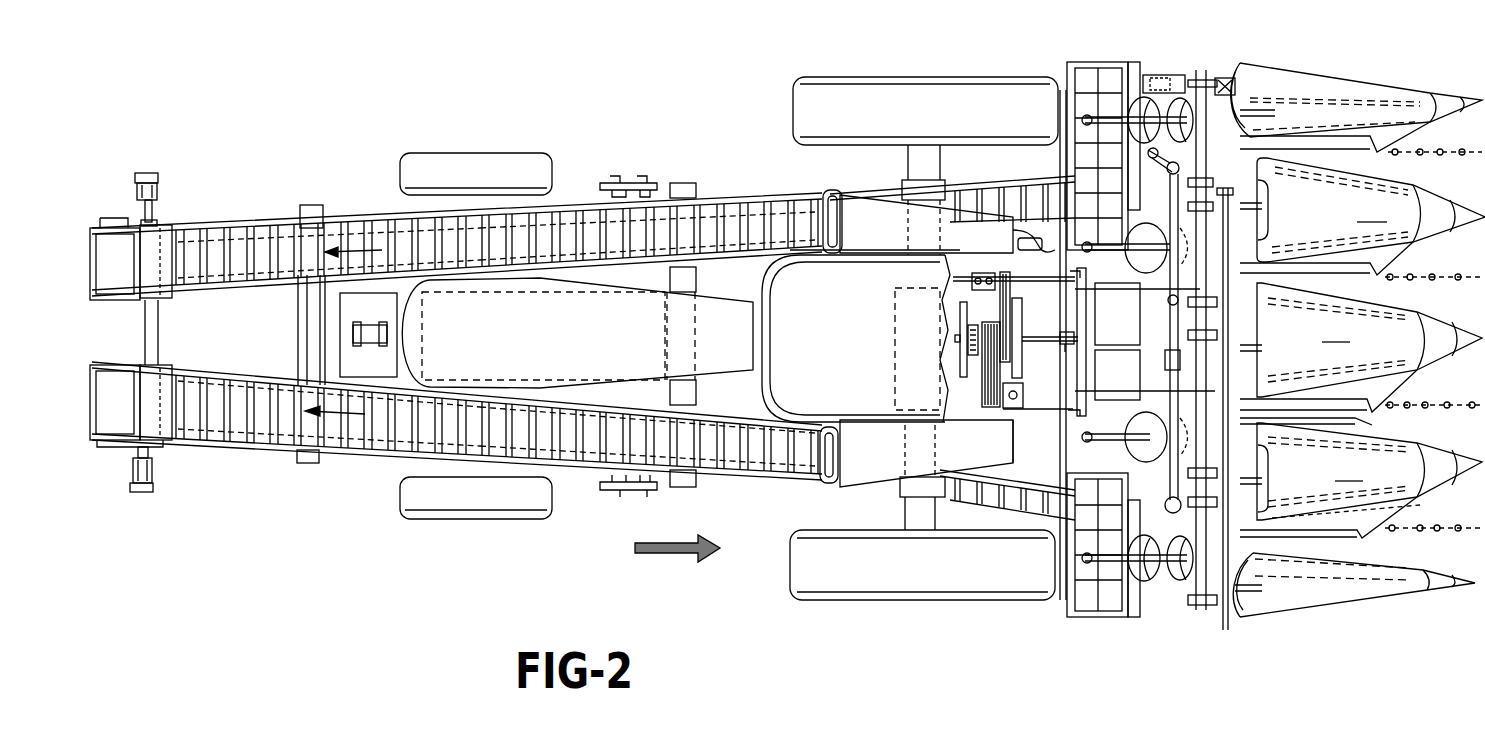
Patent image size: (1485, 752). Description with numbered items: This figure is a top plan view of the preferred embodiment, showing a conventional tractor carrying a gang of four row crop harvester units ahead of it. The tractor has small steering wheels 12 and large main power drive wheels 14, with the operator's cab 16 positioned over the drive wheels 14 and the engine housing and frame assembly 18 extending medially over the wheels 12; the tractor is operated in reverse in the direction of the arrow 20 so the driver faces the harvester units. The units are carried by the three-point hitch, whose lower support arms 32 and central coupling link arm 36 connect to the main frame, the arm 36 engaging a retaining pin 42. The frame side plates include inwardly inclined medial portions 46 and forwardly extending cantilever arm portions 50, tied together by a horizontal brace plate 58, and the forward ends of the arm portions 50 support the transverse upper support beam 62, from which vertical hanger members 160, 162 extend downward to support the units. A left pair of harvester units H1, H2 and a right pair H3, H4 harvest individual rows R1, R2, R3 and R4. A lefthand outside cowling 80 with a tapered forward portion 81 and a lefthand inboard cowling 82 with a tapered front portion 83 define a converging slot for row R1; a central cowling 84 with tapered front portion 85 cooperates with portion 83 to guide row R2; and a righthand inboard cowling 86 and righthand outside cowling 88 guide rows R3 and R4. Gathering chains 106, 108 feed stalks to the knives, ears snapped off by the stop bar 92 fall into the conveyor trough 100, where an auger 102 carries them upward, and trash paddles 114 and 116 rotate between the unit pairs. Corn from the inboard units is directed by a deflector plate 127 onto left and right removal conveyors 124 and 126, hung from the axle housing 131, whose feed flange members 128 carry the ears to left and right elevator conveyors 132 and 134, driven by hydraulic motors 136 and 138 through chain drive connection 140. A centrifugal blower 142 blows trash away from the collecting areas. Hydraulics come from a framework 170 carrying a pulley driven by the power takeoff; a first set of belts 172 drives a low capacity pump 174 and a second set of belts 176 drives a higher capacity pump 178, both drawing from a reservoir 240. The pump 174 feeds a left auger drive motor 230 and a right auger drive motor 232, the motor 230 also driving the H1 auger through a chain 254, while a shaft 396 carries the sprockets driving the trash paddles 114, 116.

The steering wheels 12 is at (455, 160).
The main power drive wheels 14 is at (852, 82).
The operator's cab 16 is at (861, 336).
The engine housing and frame assembly 18 is at (577, 333).
The arrow 20 is at (680, 558).
The lower support arms 32 is at (1050, 280).
The coupling link arm 36 is at (1058, 344).
The retaining pin 42 is at (1038, 376).
The inwardly inclined medial portions 46 is at (1075, 280).
The cantilever arm portions 50 is at (1092, 332).
The horizontal brace plate 58 is at (1078, 310).
The upper support beam 62 is at (1205, 72).
The lefthand outside cowling 80 is at (1375, 90).
The tapered forward portion 81 is at (1462, 98).
The lefthand inboard cowling 82 is at (1371, 210).
The tapered front portion 83 is at (1447, 212).
The central cowling 84 is at (1369, 340).
The tapered front portion 85 is at (1470, 335).
The righthand inboard cowling 86 is at (1369, 471).
The righthand outside cowling 88 is at (1330, 600).
The snap or stop bar 92 is at (1320, 150).
The conveyor trough 100 is at (1118, 78).
The auger 102 is at (1258, 124).
The gathering chain 106 is at (1300, 578).
The gathering chain 108 is at (1300, 503).
The trash eliminator paddle 114 is at (1267, 204).
The right trash removal paddle 116 is at (1255, 476).
The left removal conveyor 124 is at (1005, 186).
The right removal conveyor 126 is at (978, 490).
The left deflector plate 127 is at (1022, 248).
The feed flange members 128 is at (770, 185).
The axle housing 131 is at (905, 188).
The left elevator conveyor 132 is at (272, 220).
The right elevator conveyor 134 is at (245, 453).
The hydraulic motor 136 is at (152, 185).
The hydraulic motor 138 is at (152, 472).
The chain drive connection 140 is at (642, 490).
The centrifugal blower 142 is at (1100, 337).
The vertical hanger member 160 is at (1178, 76).
The vertical hanger member 162 is at (1148, 176).
The framework 170 is at (950, 322).
The first set of belts 172 is at (948, 301).
The low capacity pump 174 is at (945, 283).
The second set of belts 176 is at (948, 352).
The higher capacity pump 178 is at (950, 372).
The left auger drive motor 230 is at (1045, 238).
The right auger drive motor 232 is at (1040, 440).
The reservoir 240 is at (345, 348).
The chain 254 is at (1062, 160).
The shaft 396 is at (1258, 350).
The row R1 is at (1477, 150).
The row R2 is at (1472, 277).
The row R3 is at (1472, 405).
The row R4 is at (1468, 528).
The row harvester unit H1 is at (1420, 158).
The row harvester unit H2 is at (1420, 283).
The row harvester unit H3 is at (1420, 410).
The row harvester unit H4 is at (1417, 535).